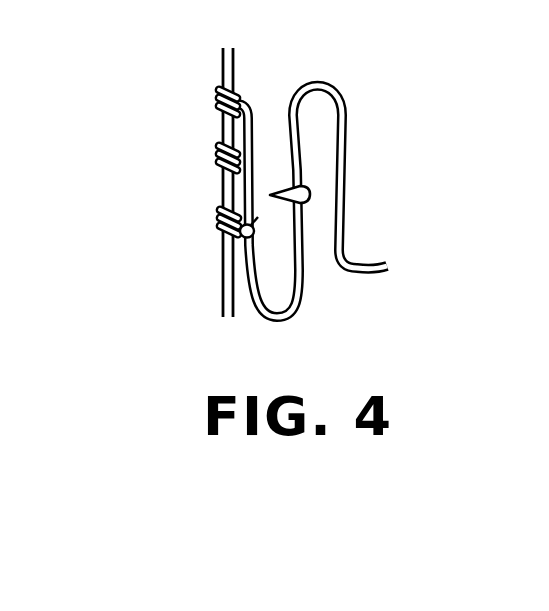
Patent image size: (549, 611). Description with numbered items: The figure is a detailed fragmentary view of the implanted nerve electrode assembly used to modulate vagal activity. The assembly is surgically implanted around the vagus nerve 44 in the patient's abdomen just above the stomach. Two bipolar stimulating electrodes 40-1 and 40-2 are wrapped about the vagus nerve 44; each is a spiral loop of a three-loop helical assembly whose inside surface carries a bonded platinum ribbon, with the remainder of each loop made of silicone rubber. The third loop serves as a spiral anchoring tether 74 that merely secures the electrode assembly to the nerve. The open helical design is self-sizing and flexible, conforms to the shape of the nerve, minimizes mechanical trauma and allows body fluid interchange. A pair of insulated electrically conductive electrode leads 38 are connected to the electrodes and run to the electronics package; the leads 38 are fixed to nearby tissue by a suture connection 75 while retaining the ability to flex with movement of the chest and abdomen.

The vagus nerve 44 is at (233, 73).
The electrode leads 38 is at (343, 180).
The bipolar stimulating electrode 40-1 is at (218, 93).
The bipolar stimulating electrode 40-2 is at (218, 157).
The spiral anchoring tether 74 is at (215, 223).
The suture connection 75 is at (310, 194).